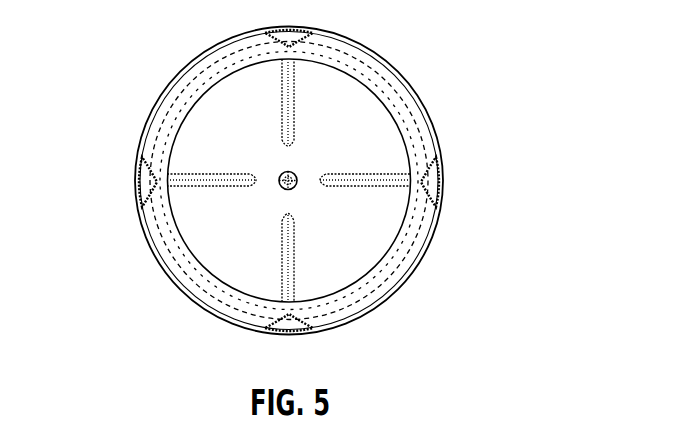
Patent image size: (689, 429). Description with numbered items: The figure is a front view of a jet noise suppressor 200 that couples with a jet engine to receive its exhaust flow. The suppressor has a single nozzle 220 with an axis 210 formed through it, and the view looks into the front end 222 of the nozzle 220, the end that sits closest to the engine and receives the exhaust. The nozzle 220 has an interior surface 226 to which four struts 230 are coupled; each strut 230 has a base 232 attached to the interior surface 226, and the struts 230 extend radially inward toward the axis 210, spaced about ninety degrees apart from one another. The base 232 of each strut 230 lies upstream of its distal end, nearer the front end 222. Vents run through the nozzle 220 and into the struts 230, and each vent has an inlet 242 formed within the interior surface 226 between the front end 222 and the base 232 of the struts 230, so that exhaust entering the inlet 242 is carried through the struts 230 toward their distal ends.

The jet noise suppressor 200 is at (438, 63).
The axis 210 is at (290, 171).
The nozzle 220 is at (165, 93).
The front end 222 is at (170, 277).
The interior surface 226 is at (374, 283).
The struts 230 is at (283, 102).
The base 232 is at (299, 72).
The inlet 242 is at (142, 181).